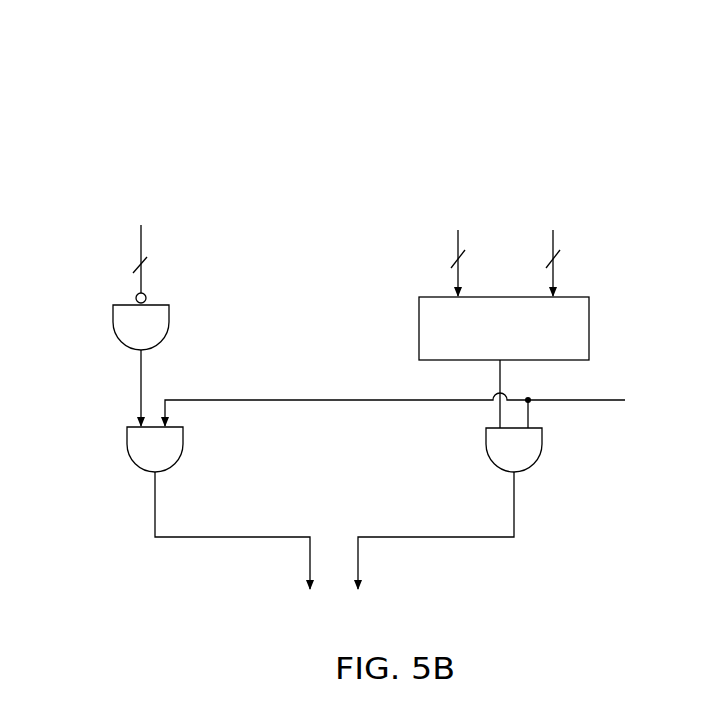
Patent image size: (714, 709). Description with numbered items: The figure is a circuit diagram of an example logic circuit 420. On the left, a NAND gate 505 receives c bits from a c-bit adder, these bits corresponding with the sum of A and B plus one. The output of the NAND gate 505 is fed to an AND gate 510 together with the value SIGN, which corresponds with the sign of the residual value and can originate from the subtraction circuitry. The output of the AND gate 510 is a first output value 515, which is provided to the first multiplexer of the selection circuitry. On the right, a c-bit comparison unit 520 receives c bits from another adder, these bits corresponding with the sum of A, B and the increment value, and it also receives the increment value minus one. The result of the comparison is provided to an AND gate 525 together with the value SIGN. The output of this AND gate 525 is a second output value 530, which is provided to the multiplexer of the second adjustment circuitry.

The logic circuit 420 is at (226, 148).
The NAND gate 505 is at (113, 330).
The AND gate 510 is at (127, 455).
The first output value 515 is at (310, 558).
The c-bit comparison unit 520 is at (589, 330).
The AND gate 525 is at (542, 460).
The second output value 530 is at (358, 555).